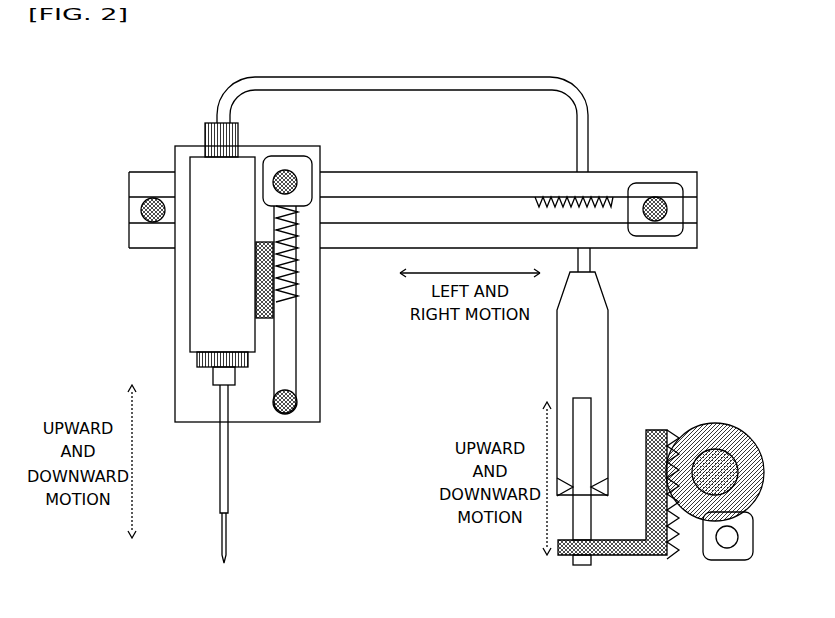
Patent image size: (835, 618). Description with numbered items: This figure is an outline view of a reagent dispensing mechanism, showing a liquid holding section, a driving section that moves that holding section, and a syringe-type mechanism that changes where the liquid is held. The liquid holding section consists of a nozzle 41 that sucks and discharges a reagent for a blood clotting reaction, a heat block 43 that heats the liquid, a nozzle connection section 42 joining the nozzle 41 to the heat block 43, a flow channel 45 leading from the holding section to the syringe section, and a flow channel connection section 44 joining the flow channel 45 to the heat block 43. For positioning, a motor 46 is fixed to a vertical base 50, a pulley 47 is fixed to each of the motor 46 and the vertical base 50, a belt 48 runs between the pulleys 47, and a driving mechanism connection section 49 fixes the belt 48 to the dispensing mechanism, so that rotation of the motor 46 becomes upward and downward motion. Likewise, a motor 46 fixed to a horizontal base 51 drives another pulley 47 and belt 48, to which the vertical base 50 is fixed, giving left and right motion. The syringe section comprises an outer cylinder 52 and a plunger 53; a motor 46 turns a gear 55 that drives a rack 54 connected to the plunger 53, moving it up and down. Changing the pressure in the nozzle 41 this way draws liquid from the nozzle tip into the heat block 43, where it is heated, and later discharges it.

The nozzle 41 is at (217, 487).
The nozzle connection section 42 is at (198, 357).
The heat block 43 is at (192, 308).
The flow channel connection section 44 is at (203, 142).
The flow channel 45 is at (257, 76).
The motor 46 is at (657, 183).
The pulley 47 is at (143, 204).
The belt 48 is at (483, 197).
The driving mechanism connection section 49 is at (272, 308).
The vertical base 50 is at (320, 276).
The horizontal base 51 is at (395, 172).
The outer cylinder 52 is at (608, 358).
The plunger 53 is at (591, 527).
The rack 54 is at (620, 557).
The gear 55 is at (750, 435).